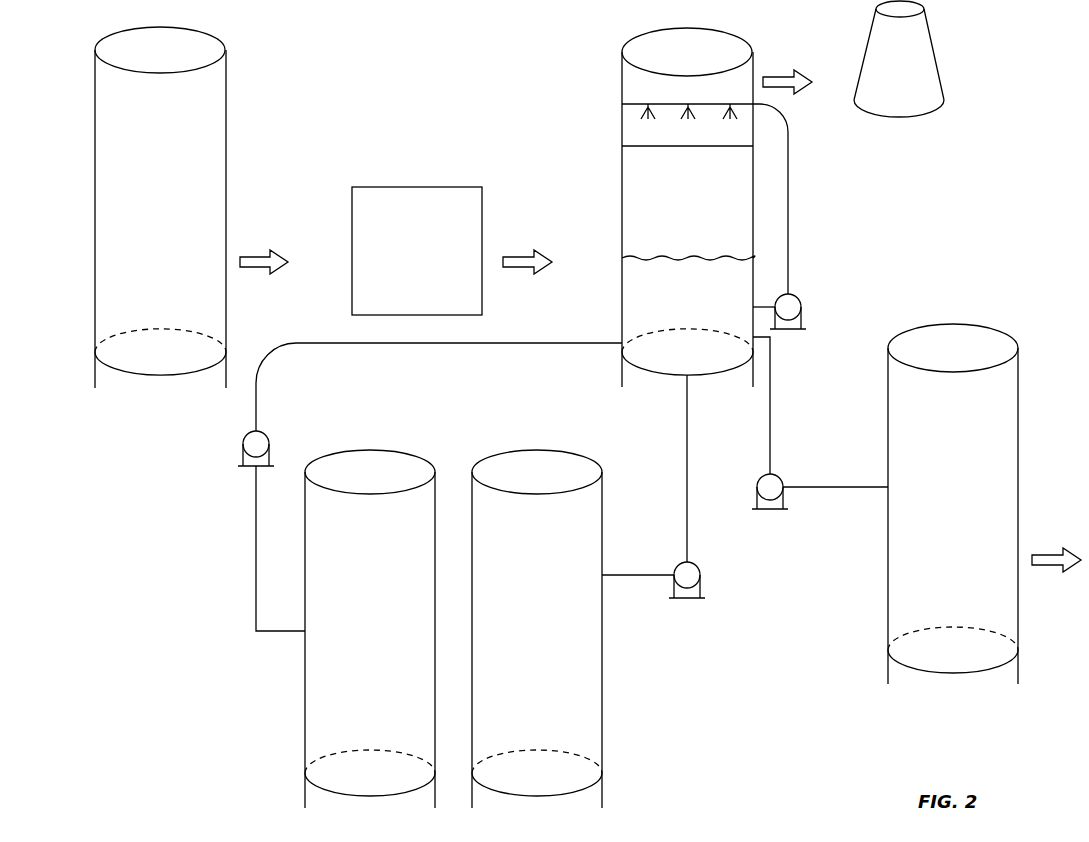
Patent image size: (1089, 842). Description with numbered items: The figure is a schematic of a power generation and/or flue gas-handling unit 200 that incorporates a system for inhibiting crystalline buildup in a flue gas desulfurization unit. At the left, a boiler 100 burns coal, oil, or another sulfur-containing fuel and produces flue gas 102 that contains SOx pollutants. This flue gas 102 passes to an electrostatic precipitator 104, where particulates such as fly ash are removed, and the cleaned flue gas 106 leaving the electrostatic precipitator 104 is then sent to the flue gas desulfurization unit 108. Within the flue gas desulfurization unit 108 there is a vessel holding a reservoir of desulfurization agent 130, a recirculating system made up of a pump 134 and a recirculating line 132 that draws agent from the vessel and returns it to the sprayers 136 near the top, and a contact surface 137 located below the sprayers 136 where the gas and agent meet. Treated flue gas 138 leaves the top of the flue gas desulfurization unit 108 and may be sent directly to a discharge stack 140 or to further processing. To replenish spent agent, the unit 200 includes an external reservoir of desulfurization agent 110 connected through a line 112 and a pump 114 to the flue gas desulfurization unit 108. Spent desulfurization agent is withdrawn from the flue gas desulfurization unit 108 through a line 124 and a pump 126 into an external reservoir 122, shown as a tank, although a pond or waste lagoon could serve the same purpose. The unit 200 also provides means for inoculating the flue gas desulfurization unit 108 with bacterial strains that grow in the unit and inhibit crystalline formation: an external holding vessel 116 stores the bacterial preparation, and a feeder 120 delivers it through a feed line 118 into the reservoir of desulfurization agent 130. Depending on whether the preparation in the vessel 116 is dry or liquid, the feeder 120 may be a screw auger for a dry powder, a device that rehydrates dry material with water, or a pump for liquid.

The power generation and/or flue gas-handling unit 200 is at (470, 39).
The boiler 100 is at (210, 131).
The flue gas 102 is at (258, 259).
The electrostatic precipitator 104 is at (404, 195).
The flue gas 106 is at (520, 259).
The flue gas desulfurization unit 108 is at (659, 207).
The external reservoir of desulfurization agent 110 is at (377, 465).
The line 112 is at (391, 344).
The pump 114 is at (250, 442).
The external holding vessel 116 is at (533, 465).
The feed line 118 is at (689, 457).
The feeder 120 is at (693, 572).
The external reservoir 122 is at (957, 335).
The line 124 is at (772, 396).
The pump 126 is at (772, 485).
The reservoir of desulfurization agent 130 is at (665, 270).
The recirculating line 132 is at (790, 195).
The pump 134 is at (792, 305).
The sprayers 136 is at (662, 110).
The contact surface 137 is at (693, 147).
The gas outlet stream 138 is at (788, 78).
The discharge stack 140 is at (917, 57).